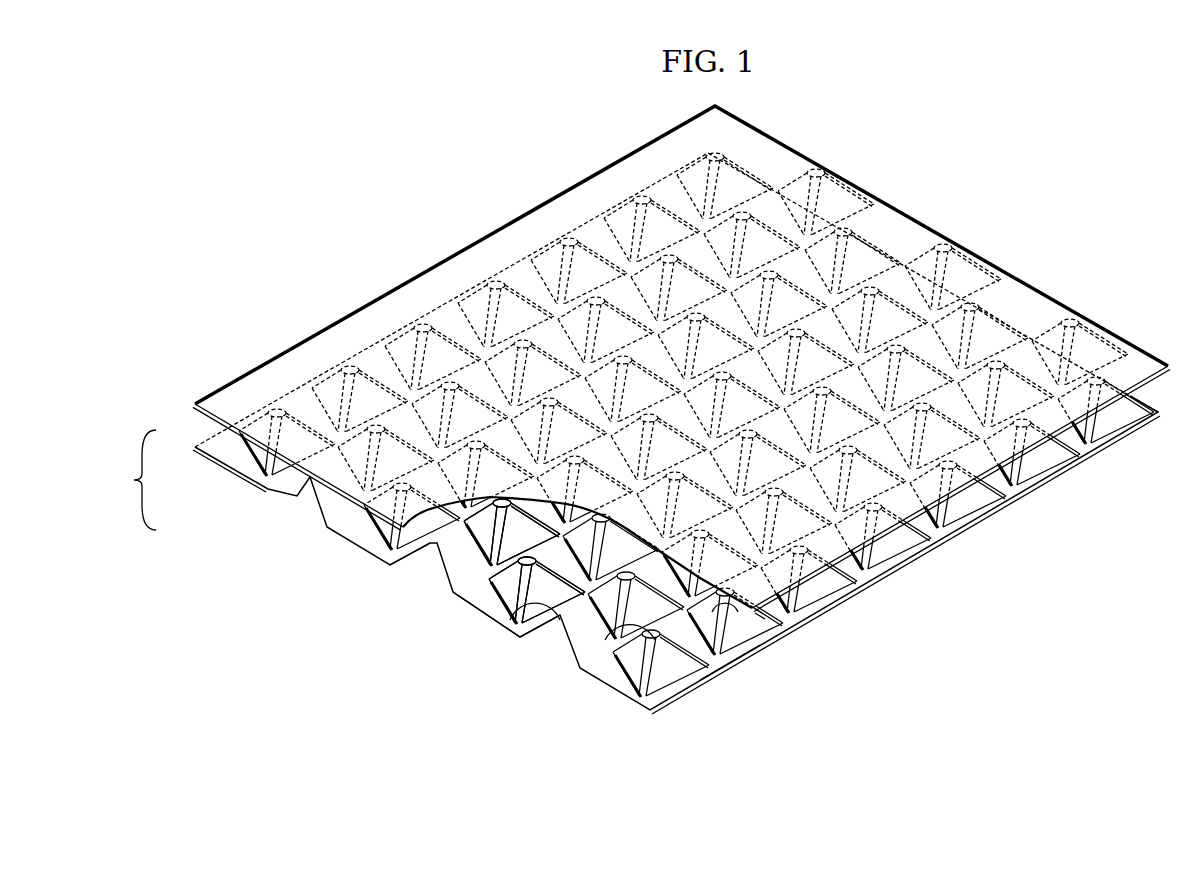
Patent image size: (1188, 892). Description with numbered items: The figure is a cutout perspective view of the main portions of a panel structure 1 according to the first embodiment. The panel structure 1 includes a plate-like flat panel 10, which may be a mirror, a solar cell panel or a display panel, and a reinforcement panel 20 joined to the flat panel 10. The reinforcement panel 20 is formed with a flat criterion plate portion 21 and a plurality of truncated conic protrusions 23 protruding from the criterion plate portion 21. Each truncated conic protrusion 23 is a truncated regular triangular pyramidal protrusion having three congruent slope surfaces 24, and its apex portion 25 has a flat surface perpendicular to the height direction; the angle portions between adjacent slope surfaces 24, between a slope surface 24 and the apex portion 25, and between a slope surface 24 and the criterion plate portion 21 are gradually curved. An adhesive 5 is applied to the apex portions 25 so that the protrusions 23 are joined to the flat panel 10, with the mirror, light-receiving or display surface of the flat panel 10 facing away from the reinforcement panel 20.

The panel structure 1 is at (137, 480).
The flat panel 10 is at (215, 412).
The reinforcement panel 20 is at (230, 474).
The criterion plate portion 21 is at (353, 530).
The truncated conic protrusion 23 is at (443, 577).
The slope surface 24 is at (707, 623).
The apex portion 25 is at (527, 610).
The adhesive 5 is at (760, 623).